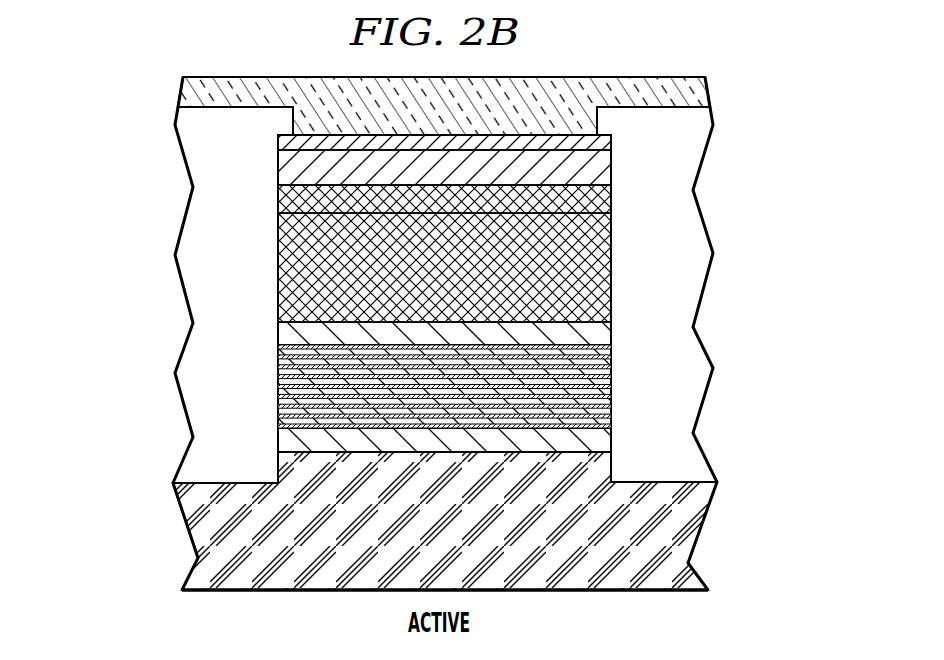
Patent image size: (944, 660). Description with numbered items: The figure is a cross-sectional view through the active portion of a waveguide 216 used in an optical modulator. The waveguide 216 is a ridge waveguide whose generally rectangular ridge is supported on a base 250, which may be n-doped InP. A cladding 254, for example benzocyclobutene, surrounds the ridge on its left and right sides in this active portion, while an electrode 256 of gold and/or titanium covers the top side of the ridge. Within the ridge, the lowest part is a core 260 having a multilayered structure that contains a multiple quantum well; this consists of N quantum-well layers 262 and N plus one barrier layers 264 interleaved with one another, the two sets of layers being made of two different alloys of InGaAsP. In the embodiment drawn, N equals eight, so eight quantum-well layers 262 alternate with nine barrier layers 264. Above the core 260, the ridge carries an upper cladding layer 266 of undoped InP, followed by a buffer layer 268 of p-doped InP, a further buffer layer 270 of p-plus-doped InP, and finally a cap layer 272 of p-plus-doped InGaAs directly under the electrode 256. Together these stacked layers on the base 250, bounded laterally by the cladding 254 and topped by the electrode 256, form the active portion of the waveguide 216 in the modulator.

The waveguide 216 is at (144, 112).
The base 250 is at (685, 510).
The cladding 254 is at (225, 192).
The electrode 256 is at (695, 94).
The core 260 is at (621, 345).
The quantum-well layers 262 is at (278, 452).
The barrier layers 264 is at (278, 444).
The upper cladding layer 266 is at (278, 222).
The buffer layer 268 is at (611, 203).
The buffer layer 270 is at (611, 168).
The cap layer 272 is at (278, 139).